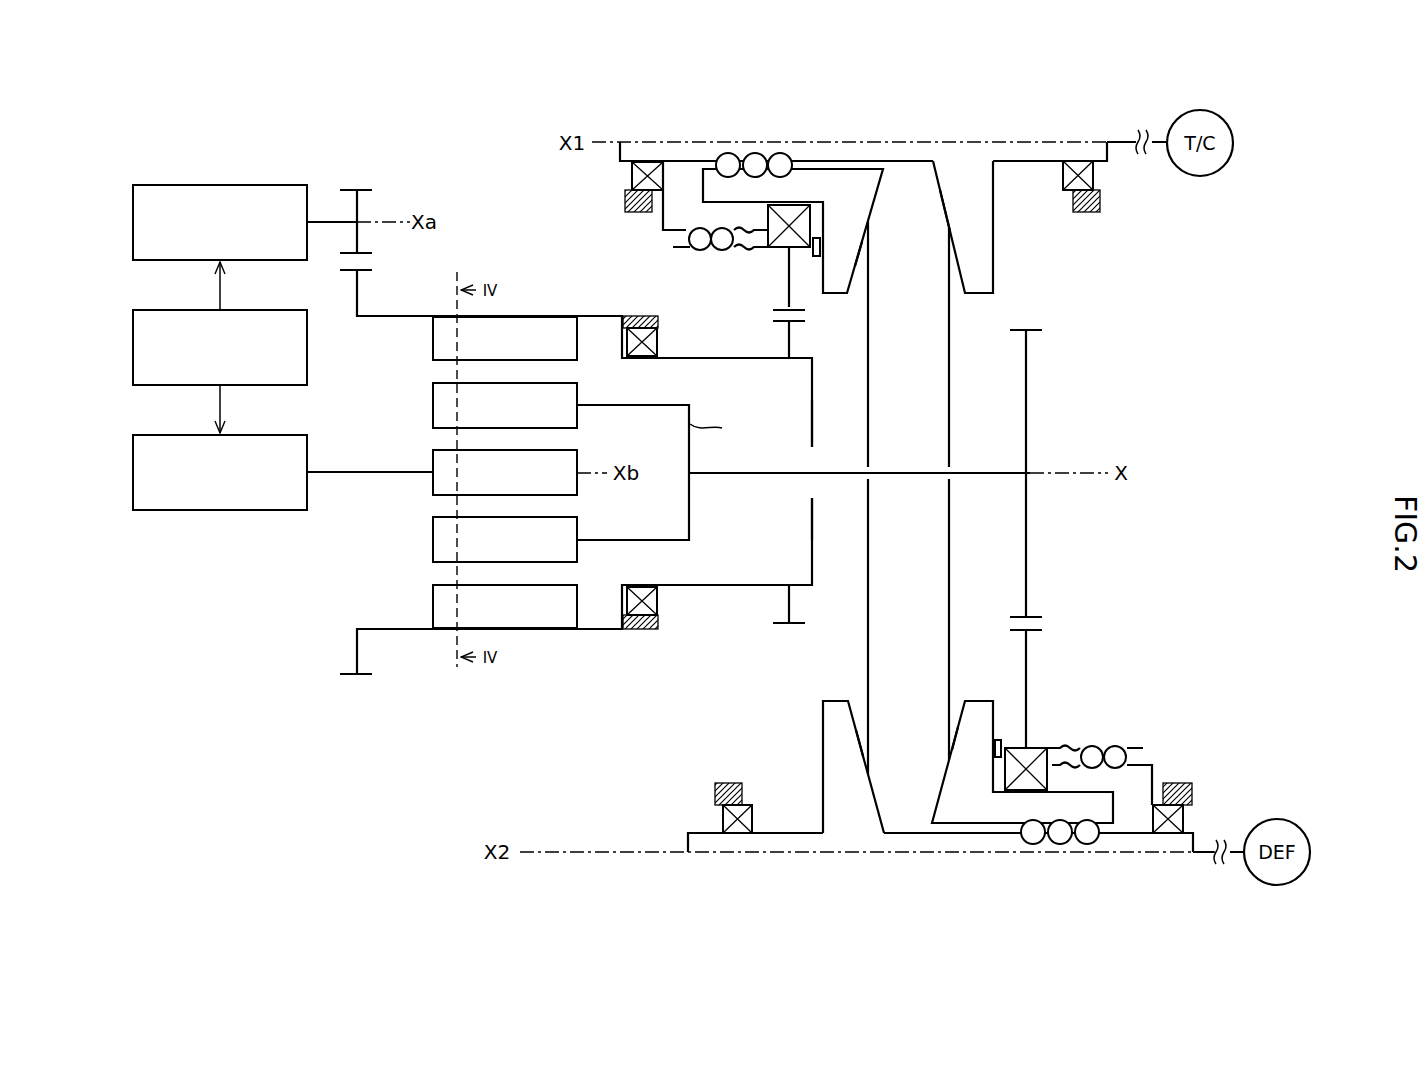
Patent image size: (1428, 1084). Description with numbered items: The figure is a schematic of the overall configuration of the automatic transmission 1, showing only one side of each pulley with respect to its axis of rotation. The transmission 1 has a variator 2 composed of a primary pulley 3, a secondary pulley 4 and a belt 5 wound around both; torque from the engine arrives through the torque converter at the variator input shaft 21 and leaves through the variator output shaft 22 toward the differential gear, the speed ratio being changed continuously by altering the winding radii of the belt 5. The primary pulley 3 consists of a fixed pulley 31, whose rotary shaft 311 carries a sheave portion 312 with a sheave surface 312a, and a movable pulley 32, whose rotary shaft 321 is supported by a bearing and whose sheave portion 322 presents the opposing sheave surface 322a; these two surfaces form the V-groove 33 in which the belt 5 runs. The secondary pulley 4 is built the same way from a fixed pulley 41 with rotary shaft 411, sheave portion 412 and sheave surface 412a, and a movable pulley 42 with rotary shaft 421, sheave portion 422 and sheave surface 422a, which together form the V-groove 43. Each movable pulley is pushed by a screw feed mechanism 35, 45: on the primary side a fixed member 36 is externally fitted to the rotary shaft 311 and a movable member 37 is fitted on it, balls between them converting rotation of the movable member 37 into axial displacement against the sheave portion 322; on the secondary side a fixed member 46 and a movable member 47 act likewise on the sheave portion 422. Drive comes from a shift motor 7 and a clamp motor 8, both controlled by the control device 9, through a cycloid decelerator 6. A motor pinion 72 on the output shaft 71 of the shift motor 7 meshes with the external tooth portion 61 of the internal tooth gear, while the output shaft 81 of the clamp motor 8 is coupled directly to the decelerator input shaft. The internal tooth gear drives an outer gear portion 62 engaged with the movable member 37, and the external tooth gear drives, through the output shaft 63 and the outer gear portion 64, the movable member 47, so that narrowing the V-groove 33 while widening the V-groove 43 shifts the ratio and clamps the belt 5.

The automatic transmission 1 is at (255, 780).
The variator 2 is at (1178, 405).
The primary pulley 3 is at (1036, 300).
The secondary pulley 4 is at (1048, 660).
The belt 5 is at (953, 585).
The cycloid decelerator 6 is at (477, 253).
The shift motor 7 is at (133, 218).
The clamp motor 8 is at (133, 471).
The control device 9 is at (133, 344).
The variator input shaft 21 is at (1118, 141).
The variator output shaft 22 is at (656, 854).
The fixed pulley 31 is at (1060, 90).
The movable pulley 32 is at (860, 90).
The V-groove 33 is at (888, 260).
The screw feed mechanism 35 is at (568, 213).
The fixed member 36 is at (658, 218).
The movable member 37 is at (783, 290).
The fixed pulley 41 is at (933, 908).
The movable pulley 42 is at (968, 908).
The V-groove 43 is at (888, 784).
The screw feed mechanism 45 is at (1230, 657).
The bearing housing 46 is at (1155, 761).
The movable member 47 is at (1034, 717).
The external tooth portion 61 is at (358, 290).
The outer gear portion 62 is at (789, 335).
The output shaft 63 is at (788, 478).
The outer gear portion 64 is at (1024, 520).
The output shaft 71 is at (325, 218).
The motor pinion 72 is at (363, 190).
The output shaft 81 is at (343, 470).
The rotary shaft 311 is at (1033, 152).
The input fixed gear 312 is at (952, 187).
The sheave surface 312a is at (946, 250).
The rotary shaft 321 is at (757, 185).
The sheave portion 322 is at (846, 220).
The sheave surface 322a is at (858, 268).
The output shaft body 411 is at (910, 840).
The output fixed gear 412 is at (848, 792).
The sheave surface 412a is at (860, 728).
The output gear bearing 421 is at (1062, 845).
The sheave portion 422 is at (975, 768).
The sheave surface 422a is at (956, 730).